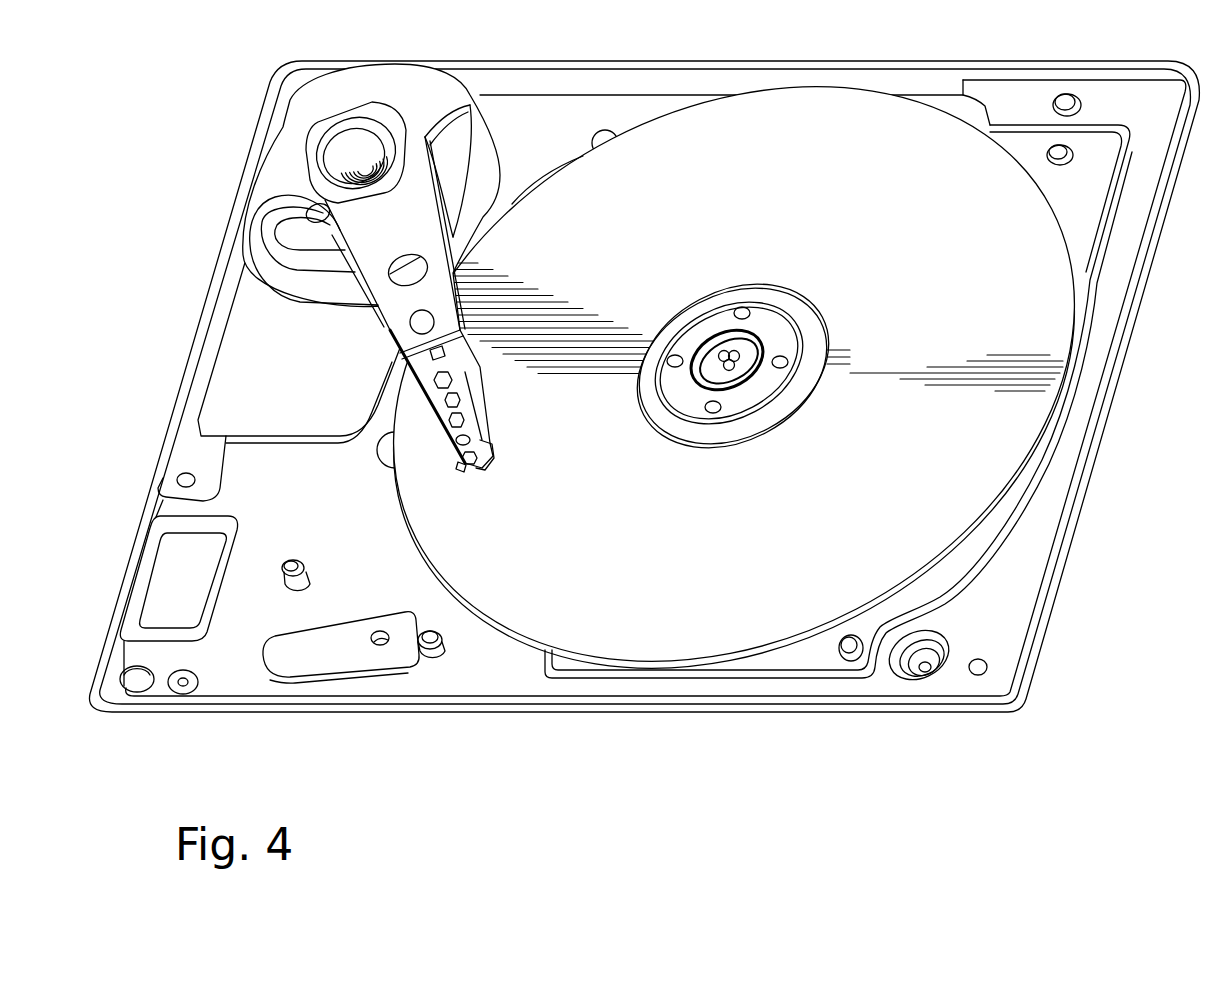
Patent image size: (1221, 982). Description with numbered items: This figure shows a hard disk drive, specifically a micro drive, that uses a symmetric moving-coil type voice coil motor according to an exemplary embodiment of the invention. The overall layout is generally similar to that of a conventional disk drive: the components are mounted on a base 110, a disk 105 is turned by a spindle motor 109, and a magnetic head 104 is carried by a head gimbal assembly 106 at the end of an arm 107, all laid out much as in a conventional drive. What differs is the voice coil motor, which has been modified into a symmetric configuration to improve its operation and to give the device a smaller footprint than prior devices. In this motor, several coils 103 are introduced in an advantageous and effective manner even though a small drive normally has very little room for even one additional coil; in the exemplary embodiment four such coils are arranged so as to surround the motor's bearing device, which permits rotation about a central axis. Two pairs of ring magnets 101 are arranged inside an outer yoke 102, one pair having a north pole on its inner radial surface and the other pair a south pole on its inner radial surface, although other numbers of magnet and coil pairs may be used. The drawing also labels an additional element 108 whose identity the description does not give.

The ring magnet 101 is at (288, 223).
The outer yoke 102 is at (272, 218).
The coil 103 is at (295, 252).
The magnetic head 104 is at (470, 458).
The disk 105 is at (607, 483).
The head gimbal assembly 106 is at (425, 472).
The arm 107 is at (403, 307).
The pivot boss 108 is at (355, 168).
The spindle motor 109 is at (733, 363).
The base 110 is at (500, 660).